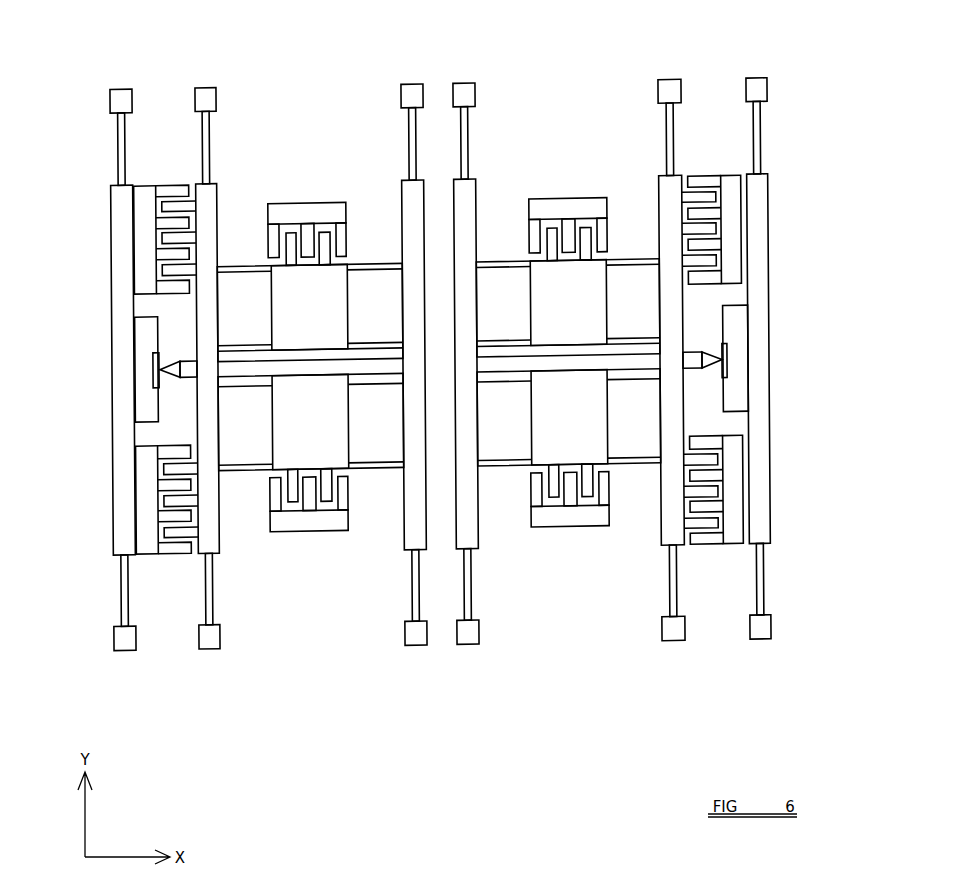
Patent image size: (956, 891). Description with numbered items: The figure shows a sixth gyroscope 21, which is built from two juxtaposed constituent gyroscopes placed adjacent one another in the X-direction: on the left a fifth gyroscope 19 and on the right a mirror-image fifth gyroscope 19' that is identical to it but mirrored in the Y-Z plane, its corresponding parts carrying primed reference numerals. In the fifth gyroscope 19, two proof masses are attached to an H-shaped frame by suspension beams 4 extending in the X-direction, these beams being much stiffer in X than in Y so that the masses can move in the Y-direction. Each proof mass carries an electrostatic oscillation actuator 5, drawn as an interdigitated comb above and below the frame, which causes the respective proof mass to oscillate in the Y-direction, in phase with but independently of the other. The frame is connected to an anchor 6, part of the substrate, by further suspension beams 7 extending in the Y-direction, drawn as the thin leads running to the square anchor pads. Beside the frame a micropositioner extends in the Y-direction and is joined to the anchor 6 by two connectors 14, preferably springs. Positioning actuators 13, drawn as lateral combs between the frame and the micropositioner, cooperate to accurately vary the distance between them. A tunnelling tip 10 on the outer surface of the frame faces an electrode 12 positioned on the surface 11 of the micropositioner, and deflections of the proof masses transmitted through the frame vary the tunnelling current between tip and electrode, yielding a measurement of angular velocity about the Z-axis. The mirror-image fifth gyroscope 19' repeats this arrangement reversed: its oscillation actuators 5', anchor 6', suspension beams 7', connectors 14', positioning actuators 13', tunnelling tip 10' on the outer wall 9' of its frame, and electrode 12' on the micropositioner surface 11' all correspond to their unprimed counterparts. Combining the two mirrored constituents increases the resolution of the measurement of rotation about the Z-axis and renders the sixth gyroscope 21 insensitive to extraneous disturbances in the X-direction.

The suspension beams 4 is at (234, 268).
The electrostatic oscillation actuator 5 is at (307, 360).
The electrostatic oscillation actuator of the mirror-image gyroscope 5' is at (569, 365).
The anchor 6 is at (244, 352).
The anchor of the mirror-image gyroscope 6' is at (629, 353).
The further suspension beams 7 is at (310, 366).
The further suspension beams of the mirror-image gyroscope 7' is at (569, 361).
The outer wall of the mirror-image frame 9' is at (685, 360).
The tunnelling tip 10 is at (142, 351).
The tunnelling tip of the mirror-image gyroscope 10' is at (702, 335).
The surface of the micropositioner 11 is at (127, 370).
The surface of the mirror-image micropositioner 11' is at (773, 350).
The electrode 12 is at (124, 384).
The electrode of the mirror-image gyroscope 12' is at (782, 387).
The positioning actuators 13 is at (135, 370).
The positioning actuators of the mirror-image gyroscope 13' is at (759, 359).
The connectors 14 is at (120, 369).
The connectors of the mirror-image gyroscope 14' is at (787, 357).
The fifth gyroscope 19 is at (242, 352).
The mirror-image fifth gyroscope 19' is at (648, 353).
The sixth gyroscope 21 is at (110, 93).